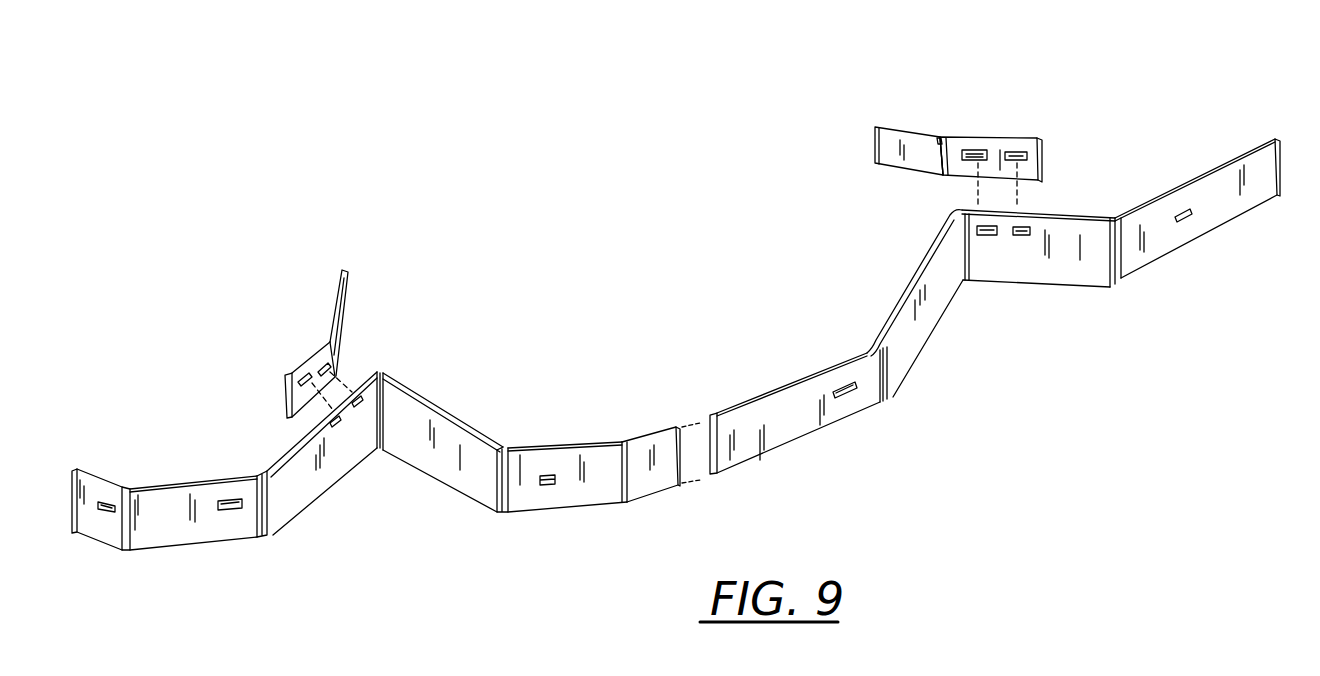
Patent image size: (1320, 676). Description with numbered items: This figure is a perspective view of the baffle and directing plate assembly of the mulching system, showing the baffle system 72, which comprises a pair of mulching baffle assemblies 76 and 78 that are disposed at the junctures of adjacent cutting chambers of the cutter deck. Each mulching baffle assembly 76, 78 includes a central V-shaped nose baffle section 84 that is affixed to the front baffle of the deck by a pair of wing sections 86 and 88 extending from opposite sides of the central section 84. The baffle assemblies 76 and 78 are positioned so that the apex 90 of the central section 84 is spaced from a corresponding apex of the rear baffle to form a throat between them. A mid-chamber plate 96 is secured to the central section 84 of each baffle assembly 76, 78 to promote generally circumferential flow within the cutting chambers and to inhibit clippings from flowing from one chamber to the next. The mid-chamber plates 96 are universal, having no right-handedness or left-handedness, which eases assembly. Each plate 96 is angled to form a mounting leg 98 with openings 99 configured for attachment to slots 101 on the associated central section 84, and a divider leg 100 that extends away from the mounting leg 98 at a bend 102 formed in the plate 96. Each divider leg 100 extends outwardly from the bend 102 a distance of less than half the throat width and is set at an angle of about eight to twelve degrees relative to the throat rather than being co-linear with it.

The baffle system 72 is at (618, 210).
The mulching baffle assembly 76 is at (460, 400).
The mulching baffle assembly 78 is at (923, 247).
The central V-shaped nose baffle section 84 is at (458, 472).
The wing section 86 is at (190, 527).
The wing section 88 is at (588, 480).
The apex 90 is at (957, 210).
The mid-chamber plate 96 is at (317, 302).
The mounting leg 98 is at (285, 388).
The openings 99 is at (303, 377).
The divider leg 100 is at (348, 288).
The slots 101 is at (337, 427).
The bend 102 is at (340, 342).